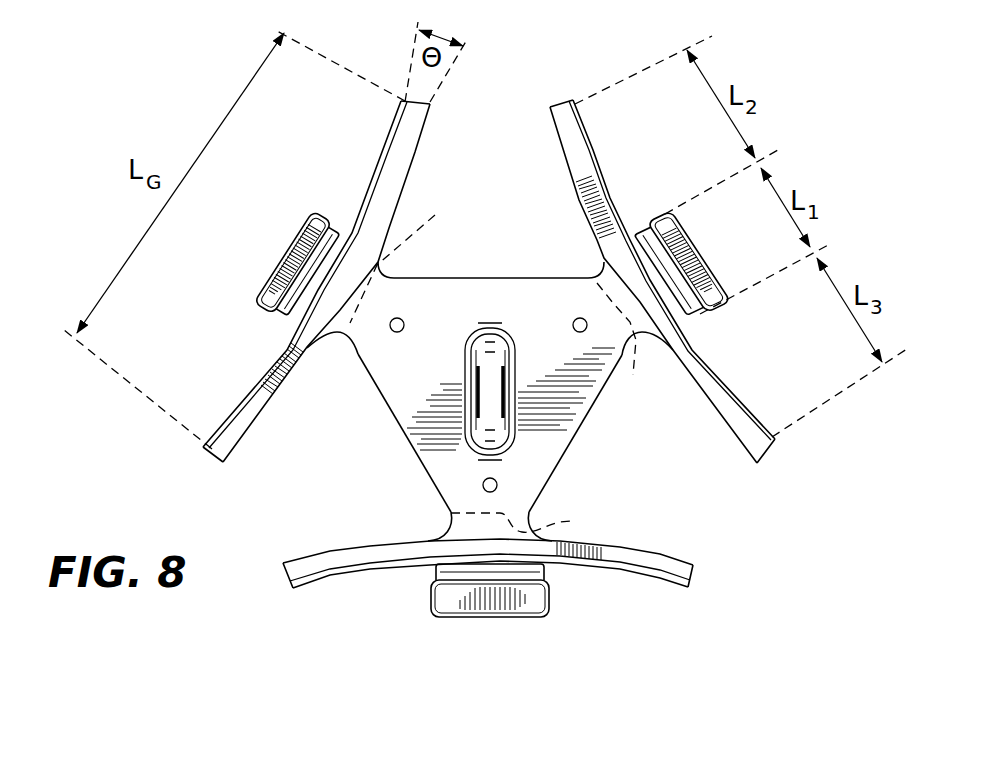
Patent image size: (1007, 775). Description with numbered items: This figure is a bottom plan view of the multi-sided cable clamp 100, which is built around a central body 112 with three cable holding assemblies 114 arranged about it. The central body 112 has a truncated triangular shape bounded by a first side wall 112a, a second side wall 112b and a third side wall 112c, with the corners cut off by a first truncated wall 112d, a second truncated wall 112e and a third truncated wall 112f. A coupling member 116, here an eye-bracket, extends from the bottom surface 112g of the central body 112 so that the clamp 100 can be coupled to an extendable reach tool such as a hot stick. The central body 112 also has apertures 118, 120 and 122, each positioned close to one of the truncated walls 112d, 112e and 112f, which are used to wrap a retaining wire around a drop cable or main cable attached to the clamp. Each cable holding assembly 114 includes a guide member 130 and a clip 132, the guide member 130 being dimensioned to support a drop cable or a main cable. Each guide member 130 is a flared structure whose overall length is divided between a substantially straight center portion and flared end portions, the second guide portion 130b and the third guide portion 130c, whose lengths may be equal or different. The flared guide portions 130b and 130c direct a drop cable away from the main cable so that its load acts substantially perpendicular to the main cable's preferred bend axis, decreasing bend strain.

The clamp 100 is at (735, 528).
The central body 112 is at (384, 404).
The first side wall 112a is at (512, 278).
The second side wall 112b is at (592, 410).
The third side wall 112c is at (361, 370).
The first truncated wall 112d is at (629, 347).
The second truncated wall 112e is at (540, 523).
The third truncated wall 112f is at (406, 256).
The bottom surface 112g is at (473, 298).
The cable holding assembly 114 is at (223, 293).
The coupling member 116 is at (462, 397).
The aperture 118 is at (403, 318).
The aperture 120 is at (573, 322).
The aperture 122 is at (499, 483).
The guide member 130 is at (251, 453).
The second guide portion 130b is at (240, 410).
The third guide portion 130c is at (396, 129).
The clip 132 is at (293, 231).